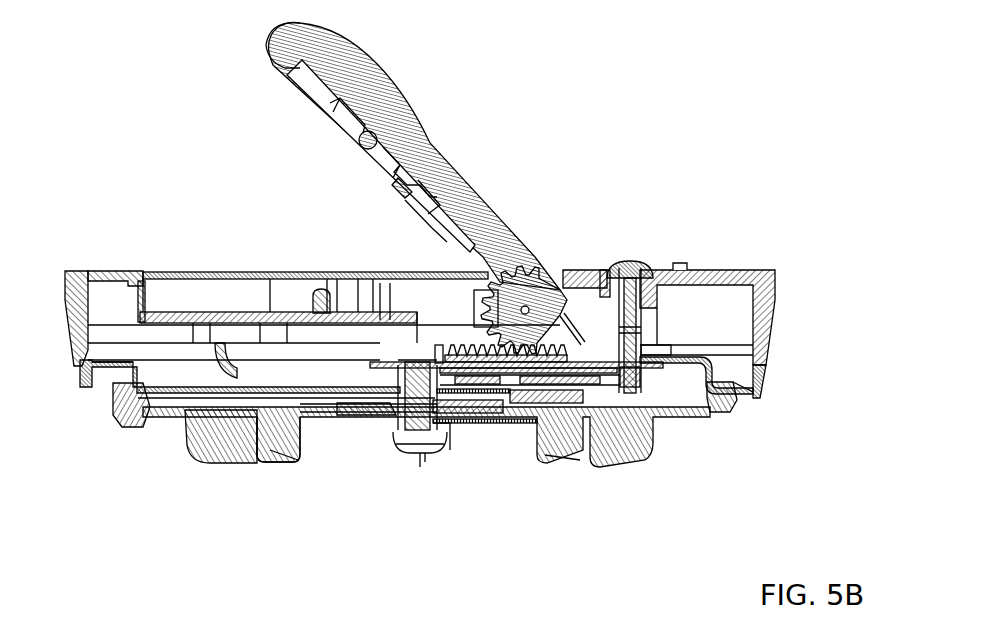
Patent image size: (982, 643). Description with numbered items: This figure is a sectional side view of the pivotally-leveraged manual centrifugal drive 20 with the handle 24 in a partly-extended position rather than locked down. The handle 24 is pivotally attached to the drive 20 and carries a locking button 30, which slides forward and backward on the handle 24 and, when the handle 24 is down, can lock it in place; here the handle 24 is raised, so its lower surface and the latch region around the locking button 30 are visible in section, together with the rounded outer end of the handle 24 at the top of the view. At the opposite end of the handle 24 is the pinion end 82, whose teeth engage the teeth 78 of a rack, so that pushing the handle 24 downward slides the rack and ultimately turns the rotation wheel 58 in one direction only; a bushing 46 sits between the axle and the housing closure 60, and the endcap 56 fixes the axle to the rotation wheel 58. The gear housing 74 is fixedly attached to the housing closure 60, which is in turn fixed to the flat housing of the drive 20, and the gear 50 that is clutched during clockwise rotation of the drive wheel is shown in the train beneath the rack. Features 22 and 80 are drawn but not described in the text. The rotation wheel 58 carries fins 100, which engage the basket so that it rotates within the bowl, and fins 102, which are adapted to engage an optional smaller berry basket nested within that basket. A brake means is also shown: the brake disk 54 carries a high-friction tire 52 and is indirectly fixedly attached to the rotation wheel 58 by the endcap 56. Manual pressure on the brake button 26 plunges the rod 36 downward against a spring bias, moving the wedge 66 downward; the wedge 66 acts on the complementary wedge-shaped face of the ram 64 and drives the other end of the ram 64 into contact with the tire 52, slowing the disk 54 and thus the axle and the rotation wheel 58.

The pivotally-leveraged manual centrifugal drive 20 is at (730, 278).
The housing projection 22 is at (682, 263).
The handle 24 is at (268, 54).
The brake button 26 is at (628, 270).
The locking button 30 is at (442, 166).
The rod 36 is at (637, 355).
The bushing 46 is at (398, 404).
The gear 50 is at (420, 432).
The high-friction tire 52 is at (256, 452).
The brake disk 54 is at (362, 410).
The endcap 56 is at (403, 445).
The rotation wheel 58 is at (674, 422).
The housing closure 60 is at (752, 391).
The ram 64 is at (586, 394).
The wedge 66 is at (631, 394).
The gear housing 74 is at (455, 369).
The teeth of rack 78 is at (533, 356).
The handle 80 is at (405, 98).
The pinion end 82 is at (525, 300).
The fins 100 is at (125, 405).
The fins 102 is at (210, 447).